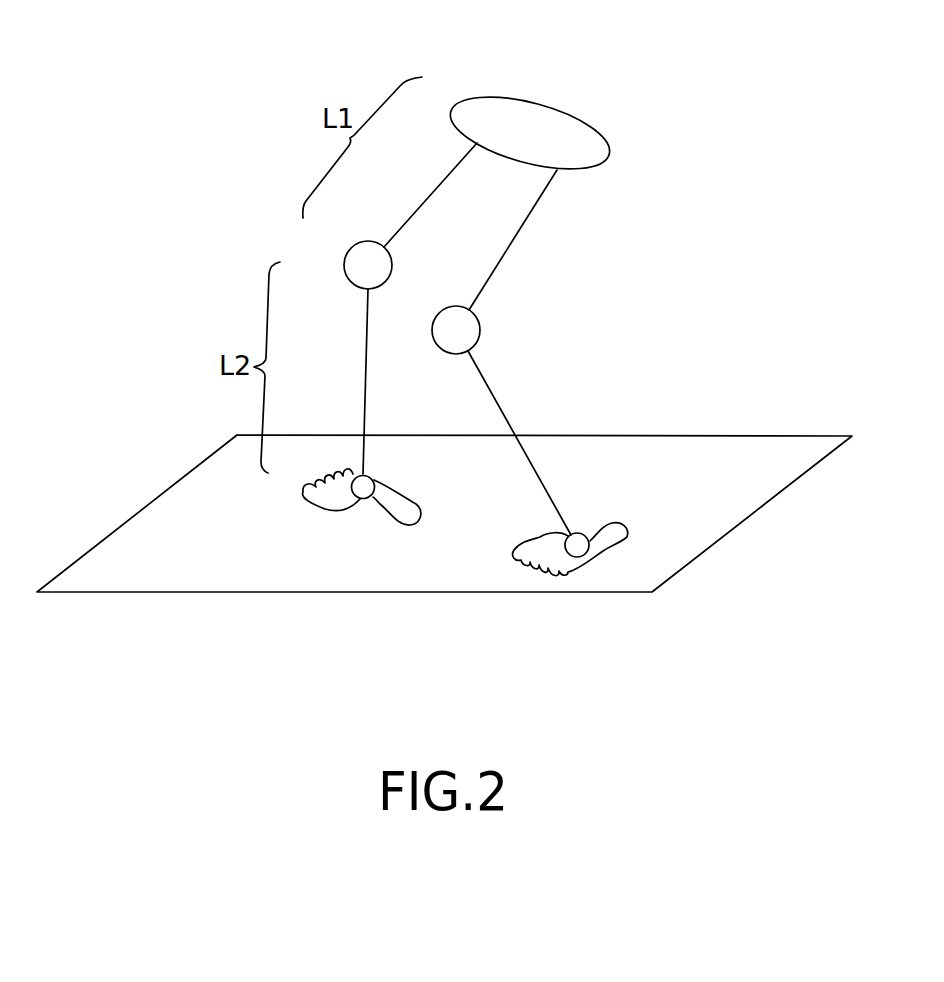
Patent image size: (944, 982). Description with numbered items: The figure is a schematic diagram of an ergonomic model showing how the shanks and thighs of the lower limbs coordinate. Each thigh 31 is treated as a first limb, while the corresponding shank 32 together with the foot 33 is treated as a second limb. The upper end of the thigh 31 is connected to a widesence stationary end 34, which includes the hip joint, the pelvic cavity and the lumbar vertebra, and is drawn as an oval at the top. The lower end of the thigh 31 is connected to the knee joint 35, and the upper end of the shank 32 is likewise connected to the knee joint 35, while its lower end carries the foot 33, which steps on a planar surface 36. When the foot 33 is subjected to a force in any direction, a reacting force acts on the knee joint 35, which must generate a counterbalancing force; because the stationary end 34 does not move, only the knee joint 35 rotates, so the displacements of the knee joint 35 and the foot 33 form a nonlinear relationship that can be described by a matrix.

The thigh 31 is at (433, 193).
The shank 32 is at (368, 355).
The foot 33 is at (377, 473).
The widesence stationary end 34 is at (503, 107).
The knee joint 35 is at (345, 254).
The planar surface 36 is at (152, 530).